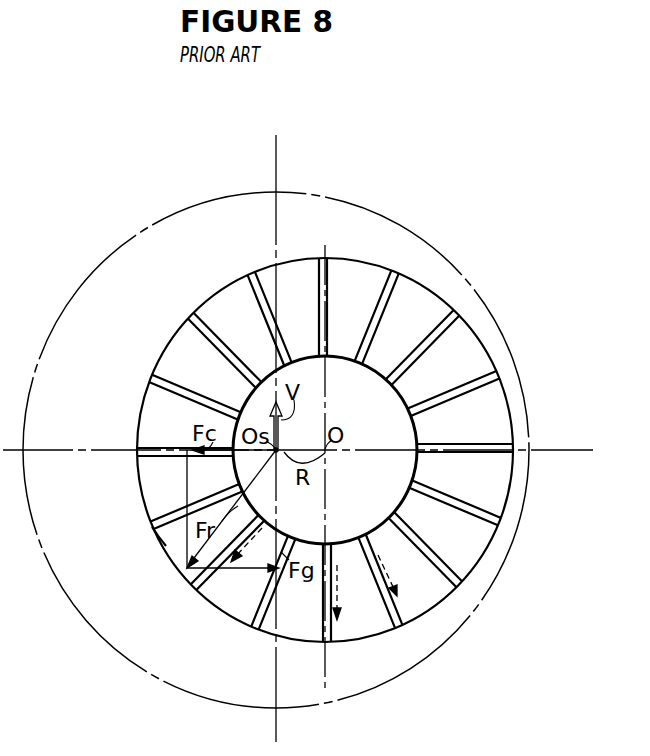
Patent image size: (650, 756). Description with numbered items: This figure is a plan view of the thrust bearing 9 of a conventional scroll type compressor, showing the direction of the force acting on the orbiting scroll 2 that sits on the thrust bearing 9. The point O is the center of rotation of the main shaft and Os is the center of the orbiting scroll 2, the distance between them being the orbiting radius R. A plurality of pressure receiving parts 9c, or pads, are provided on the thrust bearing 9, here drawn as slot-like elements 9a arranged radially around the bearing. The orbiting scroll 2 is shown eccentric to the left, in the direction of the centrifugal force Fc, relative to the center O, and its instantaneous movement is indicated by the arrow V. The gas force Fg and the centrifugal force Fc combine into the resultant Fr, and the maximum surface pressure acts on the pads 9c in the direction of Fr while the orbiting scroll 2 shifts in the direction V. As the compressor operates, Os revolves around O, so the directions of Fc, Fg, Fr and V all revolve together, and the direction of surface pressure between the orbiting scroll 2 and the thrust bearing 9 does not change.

The orbiting scroll 2 is at (428, 243).
The thrust bearing 9 is at (331, 468).
The vane slots 9a is at (392, 618).
The pressure receiving parts 9c is at (168, 544).